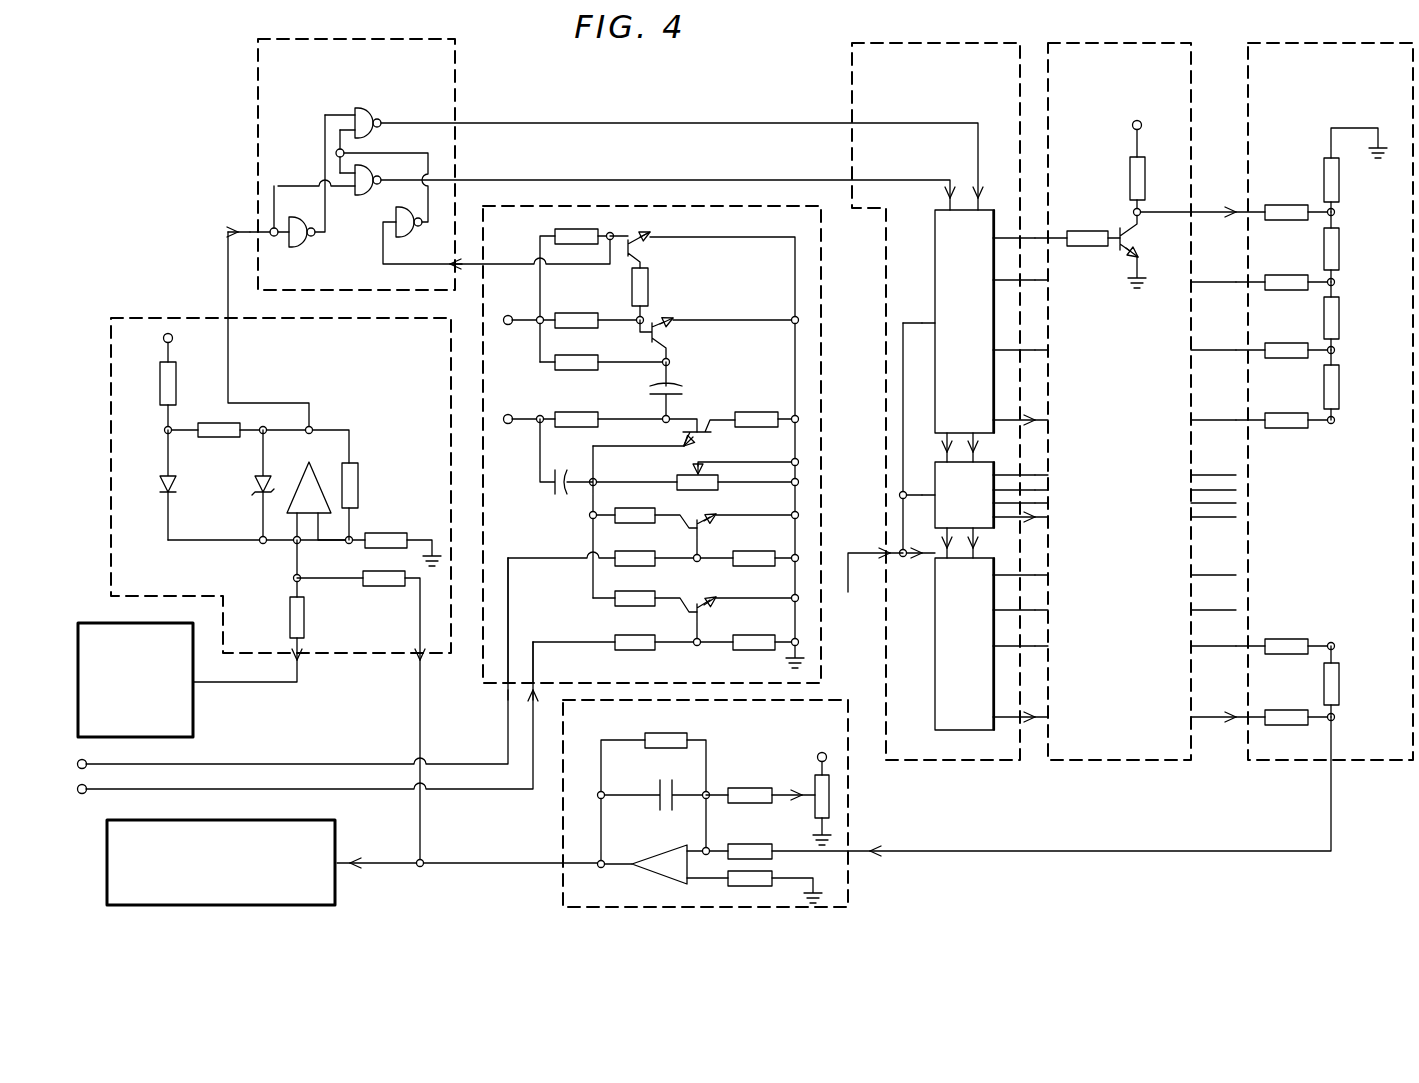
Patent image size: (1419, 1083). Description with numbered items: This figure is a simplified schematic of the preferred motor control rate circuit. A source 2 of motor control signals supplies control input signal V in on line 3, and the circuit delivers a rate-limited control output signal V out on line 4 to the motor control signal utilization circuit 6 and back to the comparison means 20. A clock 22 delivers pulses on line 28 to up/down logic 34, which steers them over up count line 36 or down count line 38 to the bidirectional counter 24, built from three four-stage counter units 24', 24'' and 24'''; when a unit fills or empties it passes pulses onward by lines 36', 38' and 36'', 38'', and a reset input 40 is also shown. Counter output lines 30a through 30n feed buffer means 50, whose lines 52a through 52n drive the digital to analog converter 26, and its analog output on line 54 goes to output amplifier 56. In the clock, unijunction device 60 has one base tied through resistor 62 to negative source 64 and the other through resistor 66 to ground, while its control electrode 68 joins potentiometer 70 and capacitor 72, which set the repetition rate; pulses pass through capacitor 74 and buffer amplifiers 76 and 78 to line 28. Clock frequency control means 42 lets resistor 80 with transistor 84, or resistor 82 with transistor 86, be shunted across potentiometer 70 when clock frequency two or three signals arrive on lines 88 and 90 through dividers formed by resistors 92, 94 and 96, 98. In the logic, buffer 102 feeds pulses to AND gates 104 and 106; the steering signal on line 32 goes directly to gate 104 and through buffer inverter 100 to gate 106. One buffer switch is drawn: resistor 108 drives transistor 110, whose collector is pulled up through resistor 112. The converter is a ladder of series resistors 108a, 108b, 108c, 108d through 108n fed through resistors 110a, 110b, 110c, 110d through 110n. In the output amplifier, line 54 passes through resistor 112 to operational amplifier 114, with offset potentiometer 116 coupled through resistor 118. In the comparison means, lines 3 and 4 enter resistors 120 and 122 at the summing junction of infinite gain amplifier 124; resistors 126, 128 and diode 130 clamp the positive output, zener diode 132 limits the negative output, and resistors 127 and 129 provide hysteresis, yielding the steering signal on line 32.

The source of motor control signals 2 is at (194, 721).
The control input signal line 3 is at (266, 684).
The control output signal line 4 is at (422, 740).
The motor control signal utilization circuit 6 is at (345, 846).
The comparison means 20 is at (372, 655).
The clock 22 is at (822, 498).
The bidirectional counter 24 is at (885, 440).
The four stage counter unit 24' is at (991, 321).
The four stage counter unit 24'' is at (991, 495).
The four stage counter unit 24''' is at (991, 644).
The digital to analog converter 26 is at (1248, 124).
The clock output line 28 is at (506, 264).
The counter output line 30a is at (1008, 235).
The counter output line 30n is at (1020, 735).
The steering signal line 32 is at (228, 280).
The up/down logic 34 is at (258, 100).
The up count line 36 is at (665, 174).
The up count coupling line 36' is at (931, 447).
The up count coupling line 36'' is at (929, 543).
The down count line 38 is at (679, 144).
The down count coupling line 38' is at (1033, 447).
The down count borrow line 38'' is at (1035, 543).
The reset line 40 is at (854, 550).
The clock frequency control means 42 is at (516, 537).
The buffer means 50 is at (1198, 100).
The buffer output line 52a is at (1212, 212).
The buffer output line 52n is at (1220, 720).
The converter output line 54 is at (1088, 848).
The output amplifier 56 is at (556, 852).
The unijunction semiconductor device 60 is at (710, 428).
The resistor 62 is at (572, 408).
The source of negative potential 64 is at (508, 425).
The resistor 66 is at (762, 412).
The control electrode 68 is at (705, 448).
The potentiometer 70 is at (690, 476).
The capacitor 72 is at (552, 500).
The capacitor 74 is at (656, 386).
The buffer amplifier 76 is at (696, 309).
The second buffer amplifier 78 is at (650, 229).
The resistor 80 is at (630, 510).
The resistor 82 is at (642, 594).
The transistor 84 is at (718, 520).
The transistor 86 is at (708, 605).
The clock frequency two input line 88 is at (142, 762).
The clock frequency three input line 90 is at (142, 790).
The resistor 92 is at (632, 556).
The resistor 94 is at (760, 553).
The resistor 96 is at (628, 636).
The resistor 98 is at (750, 652).
The buffer and inverter 100 is at (314, 255).
The buffer 102 is at (404, 238).
The AND gate 104 is at (365, 197).
The AND gate 106 is at (362, 113).
The resistor 108 is at (1078, 230).
The ladder resistor 108a is at (1344, 184).
The ladder resistor 108b is at (1341, 256).
The ladder resistor 108c is at (1341, 326).
The ladder resistor 108d is at (1341, 406).
The ladder resistor 108n is at (1346, 660).
The transistor 110 is at (1130, 250).
The ladder input resistor 110a is at (1282, 208).
The ladder input resistor 110b is at (1282, 276).
The ladder input resistor 110c is at (1282, 344).
The ladder input resistor 110d is at (1282, 414).
The ladder input resistor 110n is at (1272, 708).
The resistor 112 is at (1130, 178).
The operational amplifier 114 is at (650, 860).
The potentiometer 116 is at (832, 797).
The resistor 118 is at (744, 788).
The resistor 120 is at (290, 618).
The resistor 122 is at (386, 590).
The operational amplifier 124 is at (318, 543).
The resistor 126 is at (176, 382).
The resistor 127 is at (392, 532).
The resistor 128 is at (218, 438).
The resistor 129 is at (360, 486).
The diode 130 is at (160, 476).
The zener diode 132 is at (260, 500).